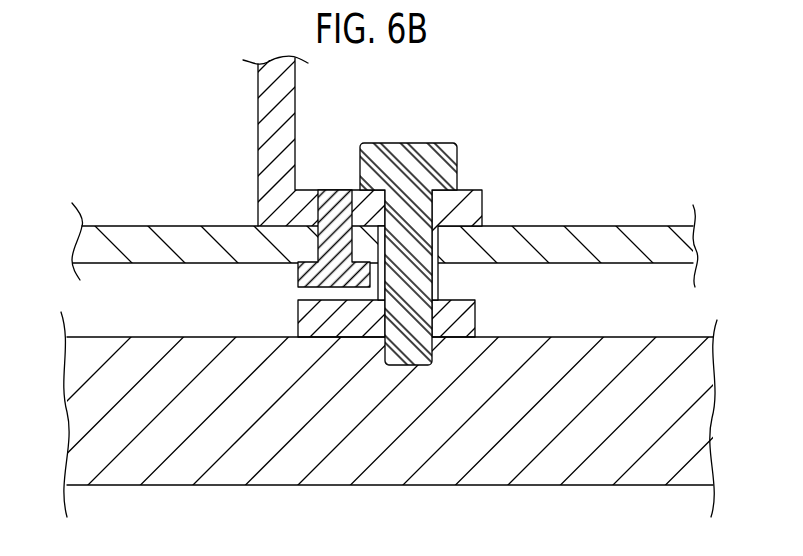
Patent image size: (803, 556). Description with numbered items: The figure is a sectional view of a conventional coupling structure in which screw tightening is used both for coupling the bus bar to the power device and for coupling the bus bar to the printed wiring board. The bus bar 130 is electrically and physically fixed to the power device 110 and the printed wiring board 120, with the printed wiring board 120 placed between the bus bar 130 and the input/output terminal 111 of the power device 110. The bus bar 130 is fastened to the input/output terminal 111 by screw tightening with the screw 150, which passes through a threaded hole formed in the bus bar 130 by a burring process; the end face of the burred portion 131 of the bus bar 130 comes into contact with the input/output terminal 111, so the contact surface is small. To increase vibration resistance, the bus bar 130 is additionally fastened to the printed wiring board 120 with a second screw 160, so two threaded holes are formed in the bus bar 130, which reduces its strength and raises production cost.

The power device 110 is at (540, 473).
The input/output terminal 111 is at (462, 311).
The printed wiring board 120 is at (127, 234).
The bus bar 130 is at (263, 108).
The portion of the bus bar formed by the burring process 131 is at (437, 276).
The screw 150 is at (452, 171).
The screw 160 is at (298, 273).